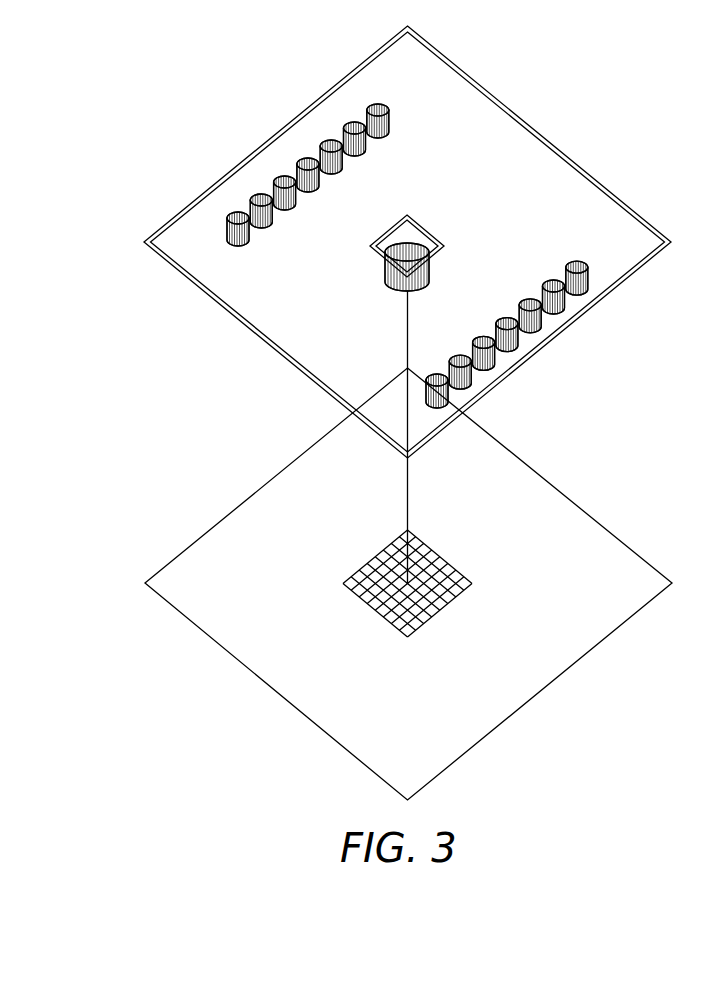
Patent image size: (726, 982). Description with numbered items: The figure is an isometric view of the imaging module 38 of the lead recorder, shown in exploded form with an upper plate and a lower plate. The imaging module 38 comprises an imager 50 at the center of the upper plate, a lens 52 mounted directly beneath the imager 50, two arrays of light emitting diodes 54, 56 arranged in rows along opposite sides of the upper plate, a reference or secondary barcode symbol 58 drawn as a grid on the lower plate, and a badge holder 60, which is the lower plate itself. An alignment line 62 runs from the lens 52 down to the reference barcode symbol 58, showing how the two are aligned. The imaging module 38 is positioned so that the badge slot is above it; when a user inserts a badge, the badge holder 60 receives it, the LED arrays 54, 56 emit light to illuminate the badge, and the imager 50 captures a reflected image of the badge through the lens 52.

The imaging module 38 is at (134, 92).
The imager 50 is at (442, 242).
The lens 52 is at (424, 287).
The array of light emitting diodes 54 is at (390, 112).
The array of light emitting diodes 56 is at (587, 285).
The reference or secondary barcode symbol 58 is at (457, 593).
The badge holder 60 is at (630, 617).
The alignment line 62 is at (405, 500).